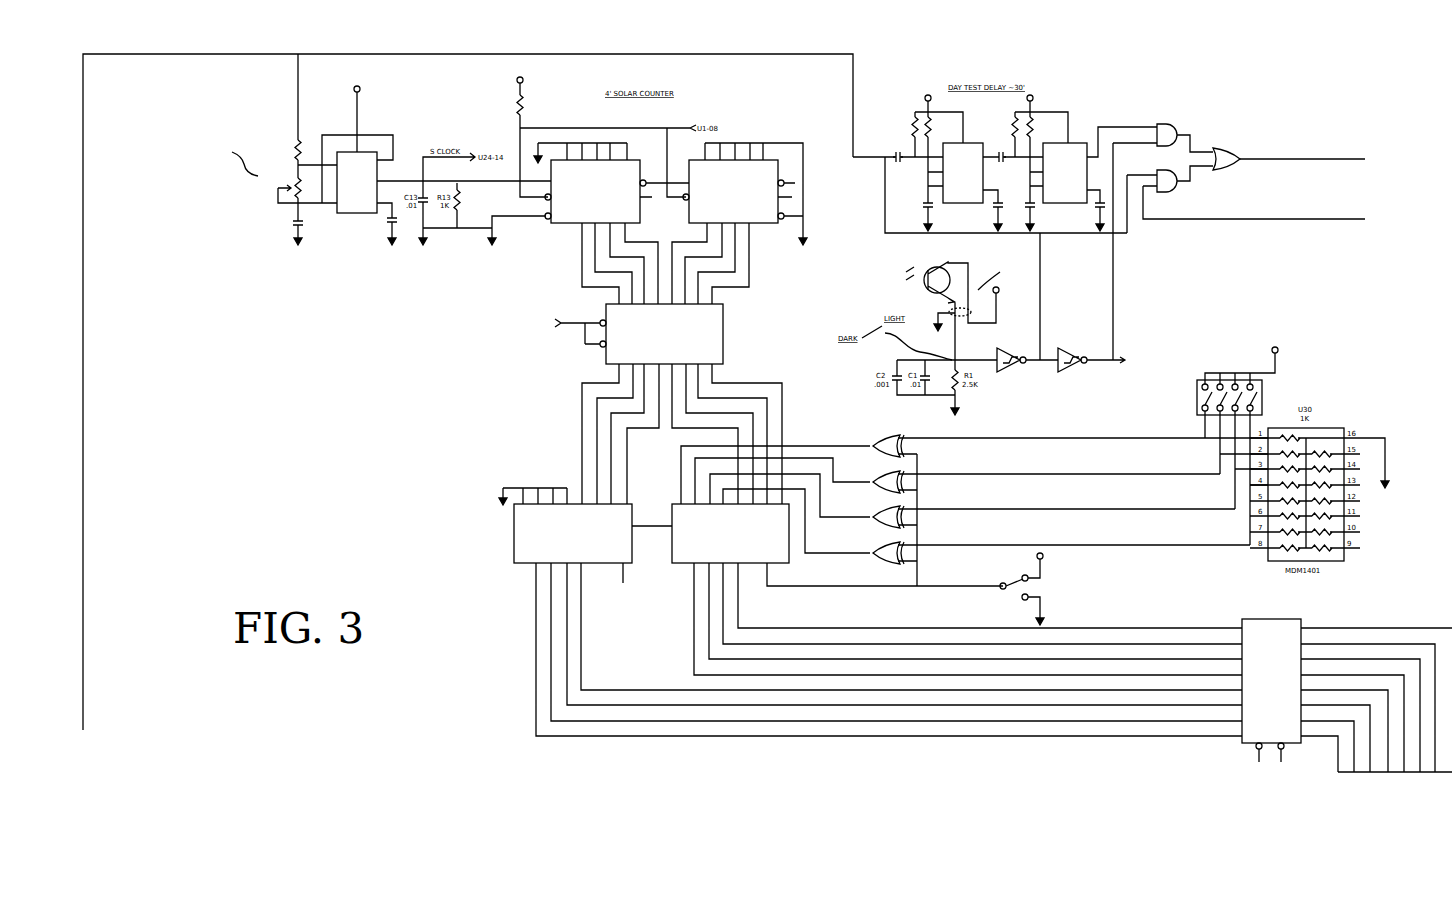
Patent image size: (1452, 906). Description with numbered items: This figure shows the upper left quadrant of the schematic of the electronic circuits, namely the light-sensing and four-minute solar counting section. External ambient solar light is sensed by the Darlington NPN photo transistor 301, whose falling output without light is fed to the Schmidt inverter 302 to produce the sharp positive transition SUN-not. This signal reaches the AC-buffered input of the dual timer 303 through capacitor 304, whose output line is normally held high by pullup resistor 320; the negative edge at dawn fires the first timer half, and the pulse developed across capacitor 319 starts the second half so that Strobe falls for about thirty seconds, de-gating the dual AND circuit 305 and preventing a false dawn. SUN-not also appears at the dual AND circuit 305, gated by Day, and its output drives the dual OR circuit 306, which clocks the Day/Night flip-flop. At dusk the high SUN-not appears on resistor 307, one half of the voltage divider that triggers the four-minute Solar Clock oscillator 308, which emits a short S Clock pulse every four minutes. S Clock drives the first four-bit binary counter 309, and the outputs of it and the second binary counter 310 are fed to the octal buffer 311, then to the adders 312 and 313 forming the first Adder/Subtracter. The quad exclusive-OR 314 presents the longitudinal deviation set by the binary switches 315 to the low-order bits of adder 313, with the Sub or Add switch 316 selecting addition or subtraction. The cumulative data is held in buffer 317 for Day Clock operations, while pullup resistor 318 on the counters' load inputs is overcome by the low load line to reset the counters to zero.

The Darlington NPN photo transistor Q1 301 is at (929, 294).
The Schmidt inverter U01 302 is at (1008, 376).
The dual timer U02 303 is at (1074, 160).
The capacitor C03 304 is at (898, 156).
The dual AND circuit U03 305 is at (1176, 128).
The dual OR circuit U04 306 is at (1234, 144).
The resistor R14 307 is at (290, 140).
The 4' Solar Clock oscillator U06 308 is at (346, 160).
The 4-bit binary counter U07 309 is at (574, 168).
The 4-bit binary counter U26 310 is at (760, 166).
The octal buffer U28 311 is at (711, 329).
The 4-bit binary adder U09 312 is at (515, 524).
The 4-bit binary adder U10 313 is at (677, 564).
The quad exclusive-OR U08 314 is at (871, 435).
The binary switches S05 315 is at (1261, 386).
The Sub or Add switch S06 316 is at (1036, 580).
The buffer U29 317 is at (1262, 627).
The pullup resistor R15 318 is at (512, 105).
The capacitor C04 319 is at (996, 156).
The pullup resistor R02 320 is at (914, 116).